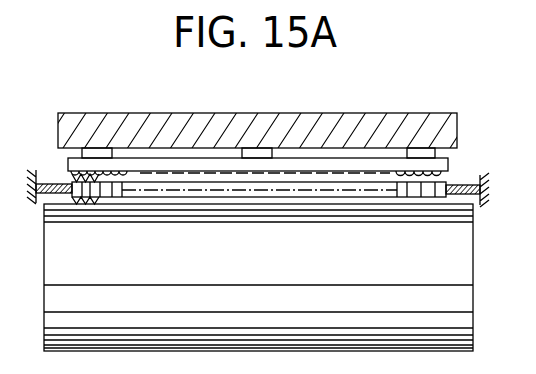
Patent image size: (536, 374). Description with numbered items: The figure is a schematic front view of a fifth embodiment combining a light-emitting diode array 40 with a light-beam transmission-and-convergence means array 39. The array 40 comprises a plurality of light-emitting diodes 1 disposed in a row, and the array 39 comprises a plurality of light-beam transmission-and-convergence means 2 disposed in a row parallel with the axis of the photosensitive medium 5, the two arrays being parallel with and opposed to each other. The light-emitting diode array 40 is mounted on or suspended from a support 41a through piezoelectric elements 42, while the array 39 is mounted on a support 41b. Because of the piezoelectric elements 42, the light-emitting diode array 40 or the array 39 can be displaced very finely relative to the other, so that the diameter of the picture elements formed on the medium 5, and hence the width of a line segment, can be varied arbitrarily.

The light-emitting diode 1 is at (124, 176).
The light-beam transmission-and-convergence means 2 is at (100, 186).
The photosensitive medium 5 is at (460, 252).
The light-beam transmission-and-convergence means array 39 is at (177, 194).
The light-emitting diode array 40 is at (197, 162).
The support 41a is at (450, 125).
The support 41b is at (469, 185).
The piezoelectric element 42 is at (97, 152).